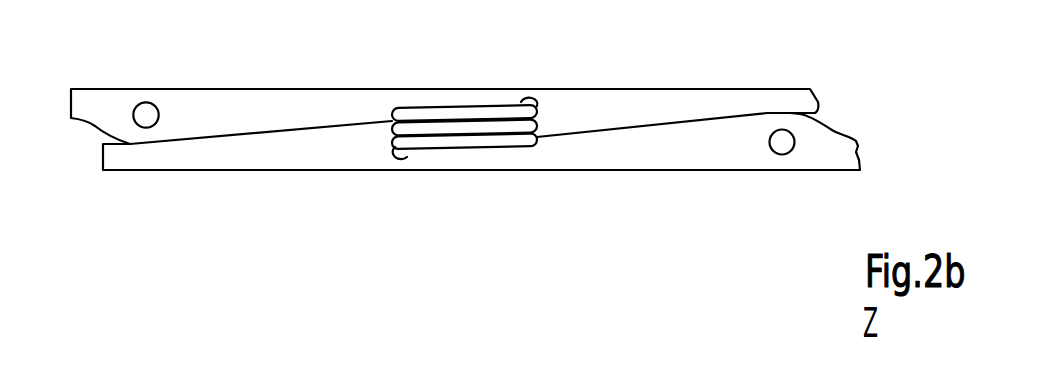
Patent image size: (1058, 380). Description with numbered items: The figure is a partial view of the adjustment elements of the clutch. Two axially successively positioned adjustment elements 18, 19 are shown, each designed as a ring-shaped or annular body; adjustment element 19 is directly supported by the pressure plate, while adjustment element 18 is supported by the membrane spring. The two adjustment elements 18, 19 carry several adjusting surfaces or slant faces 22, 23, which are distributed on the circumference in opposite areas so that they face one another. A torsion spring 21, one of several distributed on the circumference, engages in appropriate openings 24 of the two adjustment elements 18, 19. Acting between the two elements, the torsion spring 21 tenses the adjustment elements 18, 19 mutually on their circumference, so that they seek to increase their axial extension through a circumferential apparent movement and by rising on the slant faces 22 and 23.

The adjustment element 18 is at (637, 222).
The adjustment element 19 is at (706, 50).
The torsion spring 21 is at (441, 218).
The slant face 22 is at (190, 220).
The slant face 23 is at (804, 50).
The opening 24 is at (768, 223).